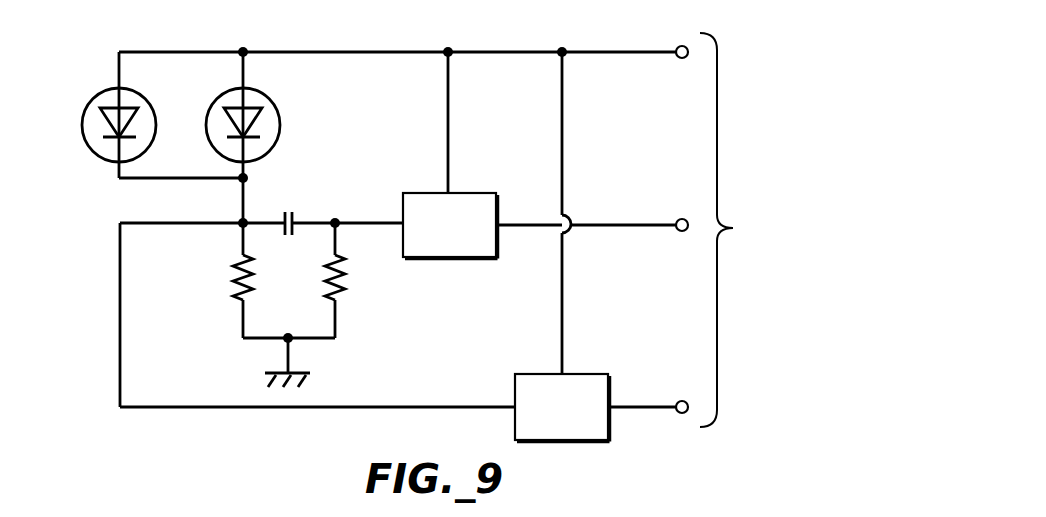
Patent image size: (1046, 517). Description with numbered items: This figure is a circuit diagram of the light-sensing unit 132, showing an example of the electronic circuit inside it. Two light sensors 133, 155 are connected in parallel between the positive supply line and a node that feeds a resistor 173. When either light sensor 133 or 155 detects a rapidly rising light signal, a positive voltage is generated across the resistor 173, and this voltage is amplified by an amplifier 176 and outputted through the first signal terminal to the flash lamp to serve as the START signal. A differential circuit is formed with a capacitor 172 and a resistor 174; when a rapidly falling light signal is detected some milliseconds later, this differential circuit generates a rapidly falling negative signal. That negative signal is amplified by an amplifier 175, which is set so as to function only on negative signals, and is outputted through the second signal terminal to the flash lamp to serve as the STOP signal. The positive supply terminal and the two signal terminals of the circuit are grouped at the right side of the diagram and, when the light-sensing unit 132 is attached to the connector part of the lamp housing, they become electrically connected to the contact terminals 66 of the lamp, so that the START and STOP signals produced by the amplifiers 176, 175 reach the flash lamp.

The light-sensing unit 132 is at (318, 40).
The light sensor 133 is at (137, 89).
The light sensor 155 is at (261, 89).
The capacitor 172 is at (296, 215).
The resistor 173 is at (237, 298).
The resistor 174 is at (343, 288).
The amplifier 175 is at (452, 259).
The amplifier 176 is at (582, 374).
The contact terminals 66 is at (776, 230).